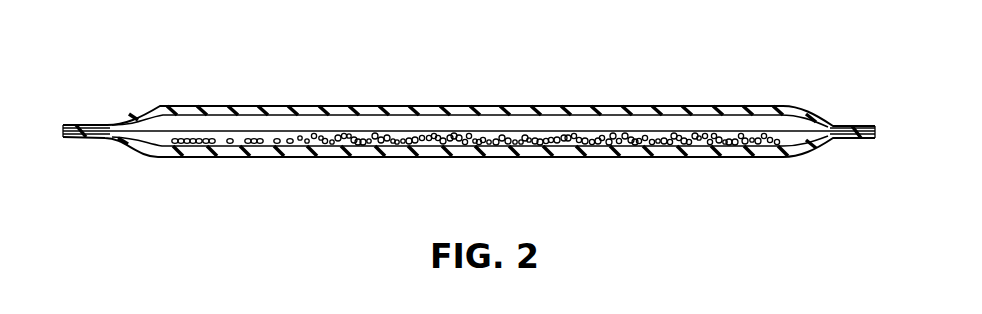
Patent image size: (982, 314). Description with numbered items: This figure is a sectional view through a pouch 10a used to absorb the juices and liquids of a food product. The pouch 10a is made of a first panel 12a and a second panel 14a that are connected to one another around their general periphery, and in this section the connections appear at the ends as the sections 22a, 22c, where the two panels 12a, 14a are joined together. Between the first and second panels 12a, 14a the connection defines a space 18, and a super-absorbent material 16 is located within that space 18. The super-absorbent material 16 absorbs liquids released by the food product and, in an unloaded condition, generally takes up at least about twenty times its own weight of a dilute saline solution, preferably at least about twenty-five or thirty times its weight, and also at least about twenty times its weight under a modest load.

The pouch 10a is at (247, 94).
The first panel 12a is at (620, 107).
The second panel 14a is at (572, 153).
The super-absorbent material 16 is at (362, 127).
The space 18 is at (750, 117).
The section 22a is at (842, 128).
The section 22c is at (86, 125).